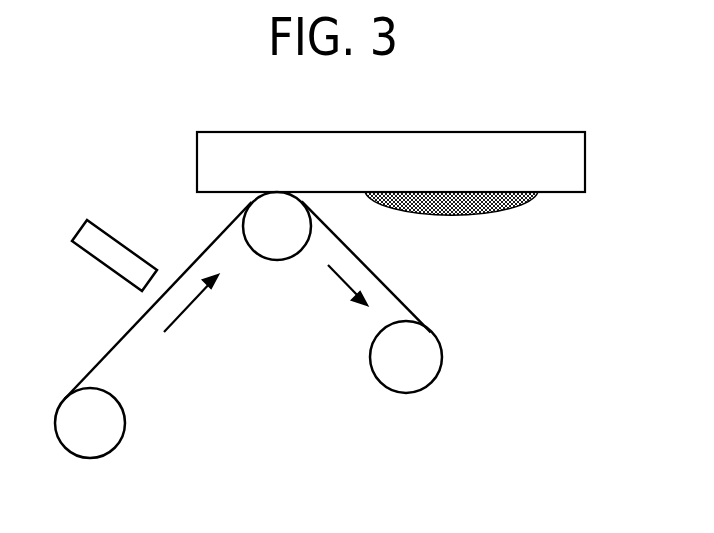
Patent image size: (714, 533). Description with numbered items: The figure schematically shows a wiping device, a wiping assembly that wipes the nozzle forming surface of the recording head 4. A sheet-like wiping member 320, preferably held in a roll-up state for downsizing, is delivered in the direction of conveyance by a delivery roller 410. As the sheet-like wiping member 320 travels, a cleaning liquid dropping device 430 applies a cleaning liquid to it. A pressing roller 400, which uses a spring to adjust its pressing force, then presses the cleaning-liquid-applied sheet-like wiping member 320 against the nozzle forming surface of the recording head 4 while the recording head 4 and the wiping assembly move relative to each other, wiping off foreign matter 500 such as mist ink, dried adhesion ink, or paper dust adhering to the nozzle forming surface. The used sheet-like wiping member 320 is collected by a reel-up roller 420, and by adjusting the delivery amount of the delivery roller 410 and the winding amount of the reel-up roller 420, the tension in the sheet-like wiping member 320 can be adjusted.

The recording head 4 is at (585, 158).
The foreign matter 500 is at (478, 218).
The pressing roller 400 is at (272, 258).
The reel-up roller 420 is at (435, 383).
The delivery roller 410 is at (117, 443).
The sheet-like wiping member 320 is at (123, 340).
The cleaning liquid dropping device 430 is at (80, 223).